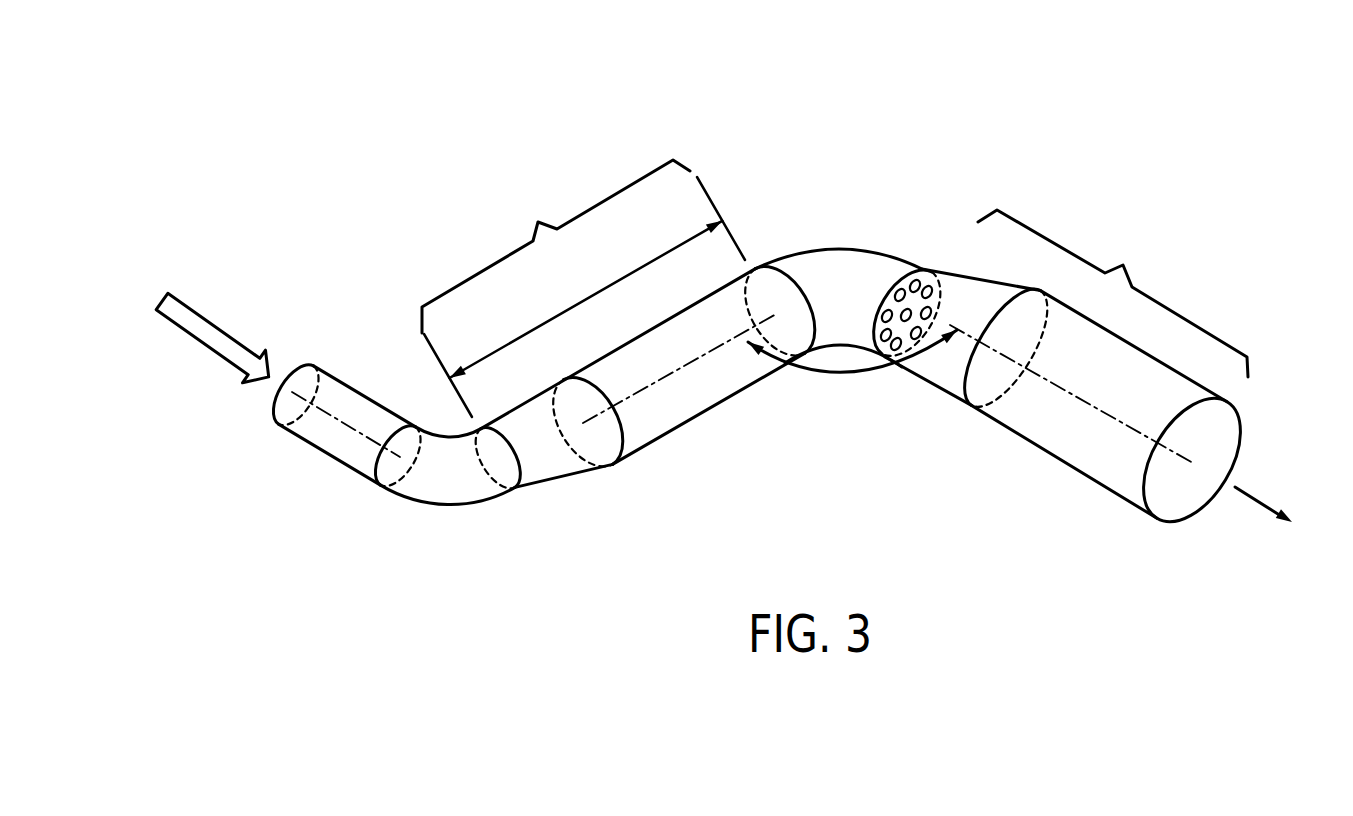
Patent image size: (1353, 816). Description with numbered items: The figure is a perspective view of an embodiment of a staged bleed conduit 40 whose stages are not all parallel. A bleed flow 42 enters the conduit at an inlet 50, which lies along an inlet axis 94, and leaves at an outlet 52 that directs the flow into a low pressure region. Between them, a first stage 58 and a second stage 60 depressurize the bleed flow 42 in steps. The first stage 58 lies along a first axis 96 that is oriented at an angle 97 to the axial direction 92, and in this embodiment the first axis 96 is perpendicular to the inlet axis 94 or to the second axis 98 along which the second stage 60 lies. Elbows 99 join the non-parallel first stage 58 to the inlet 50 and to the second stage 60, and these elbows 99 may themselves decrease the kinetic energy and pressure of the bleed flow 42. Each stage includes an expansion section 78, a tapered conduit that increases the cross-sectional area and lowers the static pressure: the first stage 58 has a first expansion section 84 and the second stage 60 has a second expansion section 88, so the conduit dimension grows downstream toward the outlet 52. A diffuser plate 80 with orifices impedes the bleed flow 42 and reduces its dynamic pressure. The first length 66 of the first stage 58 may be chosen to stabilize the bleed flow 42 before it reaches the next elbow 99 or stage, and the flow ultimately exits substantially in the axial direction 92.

The staged bleed conduit 40 is at (773, 95).
The bleed flow 42 is at (217, 323).
The inlet 50 is at (280, 425).
The outlet 52 is at (1238, 410).
The first stage 58 is at (556, 246).
The second stage 60 is at (1113, 293).
The first length 66 is at (585, 298).
The expansion section 78 is at (854, 406).
The diffuser plate 80 is at (928, 273).
The first expansion section 84 is at (561, 481).
The second expansion section 88 is at (942, 395).
The axial direction 92 is at (1262, 497).
The inlet axis 94 is at (340, 422).
The first axis 96 is at (637, 394).
The angle 97 is at (852, 377).
The second axis 98 is at (1092, 404).
The elbow 99 is at (444, 496).